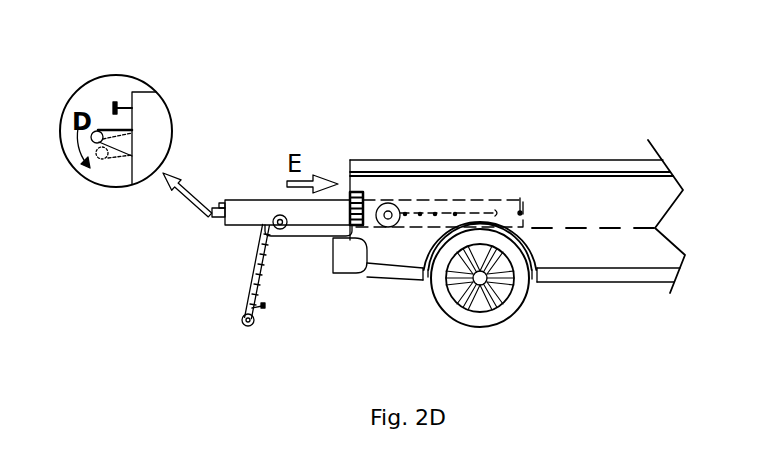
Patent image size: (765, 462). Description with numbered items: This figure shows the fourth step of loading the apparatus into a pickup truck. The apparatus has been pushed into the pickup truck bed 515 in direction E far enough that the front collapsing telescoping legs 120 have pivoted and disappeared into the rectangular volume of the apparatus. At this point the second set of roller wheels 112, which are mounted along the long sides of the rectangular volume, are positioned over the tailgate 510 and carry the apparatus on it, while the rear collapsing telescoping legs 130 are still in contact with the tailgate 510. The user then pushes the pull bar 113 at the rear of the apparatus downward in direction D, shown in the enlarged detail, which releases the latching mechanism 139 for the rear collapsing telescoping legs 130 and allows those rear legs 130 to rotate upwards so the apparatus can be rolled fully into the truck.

The handle bar 113 is at (97, 131).
The latching mechanism 139 is at (265, 215).
The second set of roller wheels 112 is at (280, 229).
The rear collapsing telescoping legs 130 is at (248, 290).
The tailgate 510 is at (320, 233).
The front collapsing telescoping legs 120 is at (424, 213).
The pickup truck bed 515 is at (561, 228).